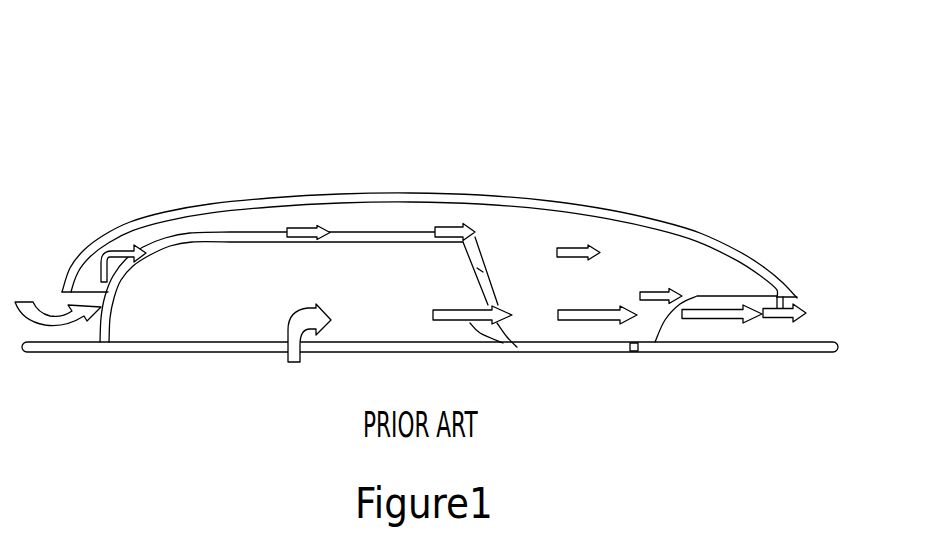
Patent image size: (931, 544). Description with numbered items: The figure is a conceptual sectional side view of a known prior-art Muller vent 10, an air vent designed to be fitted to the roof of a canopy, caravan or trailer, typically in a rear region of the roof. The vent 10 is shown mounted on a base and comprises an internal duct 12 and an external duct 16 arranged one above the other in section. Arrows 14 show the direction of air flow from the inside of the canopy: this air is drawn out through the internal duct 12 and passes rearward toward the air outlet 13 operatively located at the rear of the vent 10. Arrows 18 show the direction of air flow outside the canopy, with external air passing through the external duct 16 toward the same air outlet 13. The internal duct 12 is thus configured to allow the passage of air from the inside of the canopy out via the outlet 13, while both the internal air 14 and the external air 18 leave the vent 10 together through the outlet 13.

The Muller vent 10 is at (151, 99).
The internal duct 12 is at (371, 262).
The air outlet 13 is at (813, 291).
The arrows showing direction of air flow from inside the canopy 14 is at (295, 365).
The external duct 16 is at (230, 224).
The arrows showing direction of air flow outside the canopy 18 is at (30, 304).